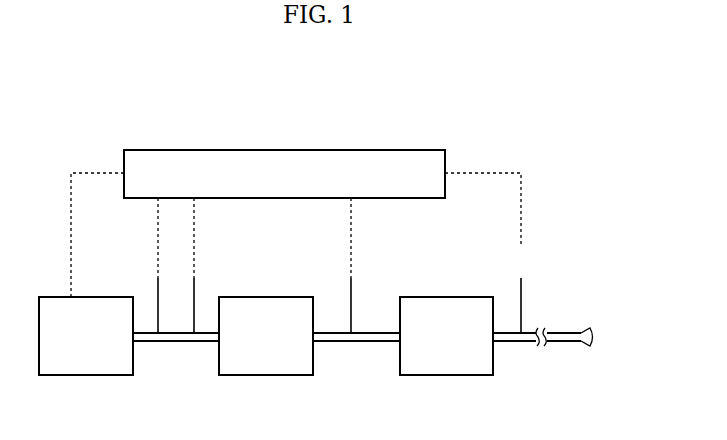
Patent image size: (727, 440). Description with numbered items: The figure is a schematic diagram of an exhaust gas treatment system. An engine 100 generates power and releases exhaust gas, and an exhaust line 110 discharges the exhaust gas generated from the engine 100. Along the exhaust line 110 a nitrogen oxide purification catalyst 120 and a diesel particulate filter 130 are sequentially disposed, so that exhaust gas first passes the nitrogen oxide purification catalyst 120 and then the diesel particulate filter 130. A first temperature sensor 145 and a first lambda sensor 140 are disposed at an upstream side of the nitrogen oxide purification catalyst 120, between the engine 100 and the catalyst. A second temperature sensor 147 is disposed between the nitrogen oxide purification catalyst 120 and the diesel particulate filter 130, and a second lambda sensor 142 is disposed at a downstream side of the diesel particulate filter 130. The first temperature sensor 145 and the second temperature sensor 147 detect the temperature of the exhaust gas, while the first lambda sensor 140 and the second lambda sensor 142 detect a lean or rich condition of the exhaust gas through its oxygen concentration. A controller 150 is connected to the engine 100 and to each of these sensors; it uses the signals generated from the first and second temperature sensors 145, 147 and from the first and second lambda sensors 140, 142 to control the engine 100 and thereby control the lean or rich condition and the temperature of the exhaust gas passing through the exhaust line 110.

The engine 100 is at (86, 376).
The exhaust line 110 is at (177, 343).
The nitrogen oxide purification catalyst 120 is at (267, 376).
The diesel particulate filter 130 is at (448, 376).
The first lambda sensor 140 is at (148, 263).
The second lambda sensor 142 is at (366, 263).
The first temperature sensor 145 is at (205, 263).
The second temperature sensor 147 is at (534, 263).
The controller 150 is at (277, 150).